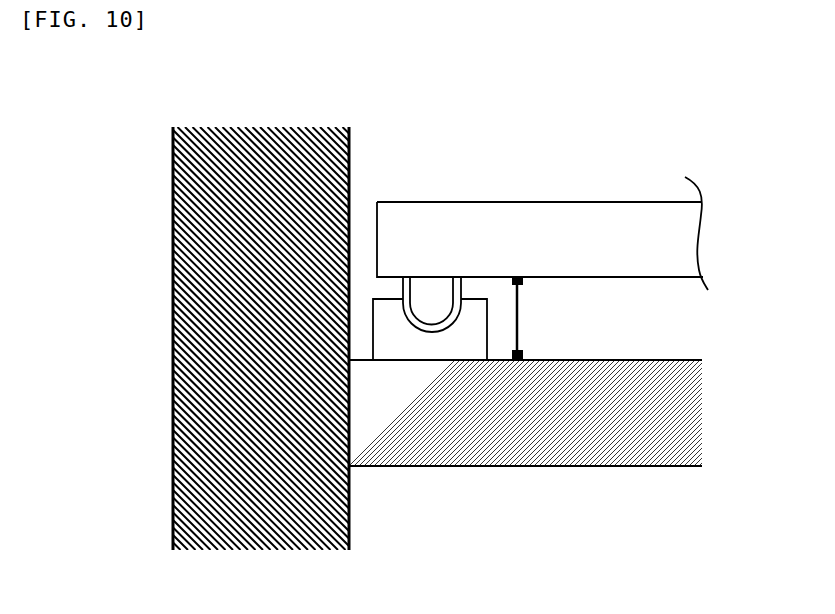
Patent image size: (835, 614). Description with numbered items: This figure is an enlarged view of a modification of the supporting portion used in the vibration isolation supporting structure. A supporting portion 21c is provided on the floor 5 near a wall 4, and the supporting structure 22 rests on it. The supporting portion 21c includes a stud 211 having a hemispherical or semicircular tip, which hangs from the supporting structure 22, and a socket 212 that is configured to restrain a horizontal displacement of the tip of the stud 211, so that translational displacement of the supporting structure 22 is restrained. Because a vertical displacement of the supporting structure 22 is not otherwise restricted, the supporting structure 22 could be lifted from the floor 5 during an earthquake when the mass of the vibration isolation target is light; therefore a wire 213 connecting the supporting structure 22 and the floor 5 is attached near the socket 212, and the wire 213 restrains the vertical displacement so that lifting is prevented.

The wall 4 is at (251, 143).
The floor 5 is at (647, 445).
The supporting structure 22 is at (667, 233).
The supporting portion 21c is at (432, 112).
The stud 211 is at (428, 303).
The socket 212 is at (474, 312).
The wire 213 is at (518, 316).